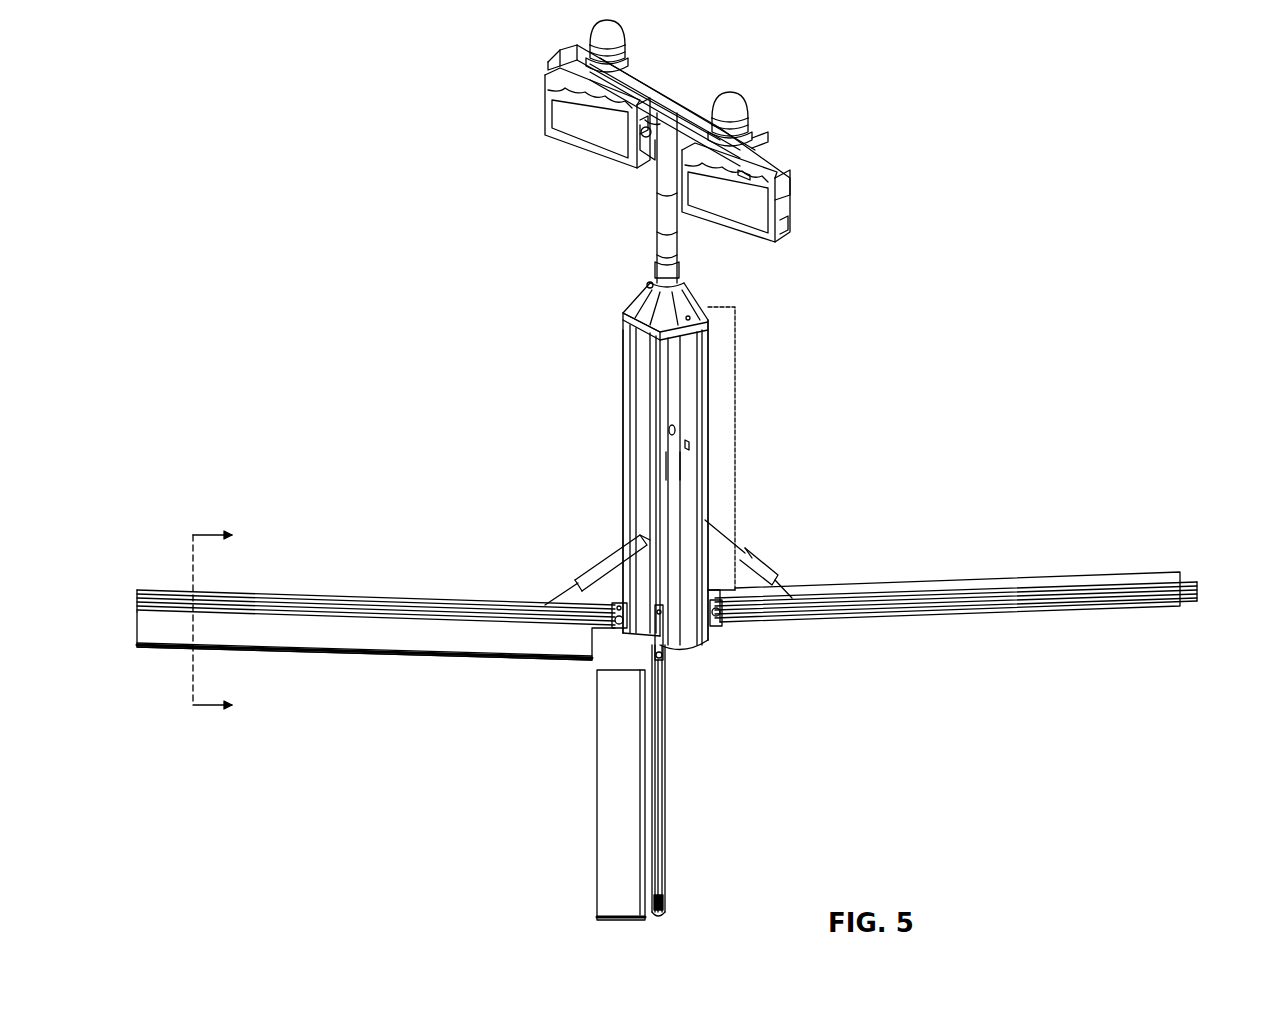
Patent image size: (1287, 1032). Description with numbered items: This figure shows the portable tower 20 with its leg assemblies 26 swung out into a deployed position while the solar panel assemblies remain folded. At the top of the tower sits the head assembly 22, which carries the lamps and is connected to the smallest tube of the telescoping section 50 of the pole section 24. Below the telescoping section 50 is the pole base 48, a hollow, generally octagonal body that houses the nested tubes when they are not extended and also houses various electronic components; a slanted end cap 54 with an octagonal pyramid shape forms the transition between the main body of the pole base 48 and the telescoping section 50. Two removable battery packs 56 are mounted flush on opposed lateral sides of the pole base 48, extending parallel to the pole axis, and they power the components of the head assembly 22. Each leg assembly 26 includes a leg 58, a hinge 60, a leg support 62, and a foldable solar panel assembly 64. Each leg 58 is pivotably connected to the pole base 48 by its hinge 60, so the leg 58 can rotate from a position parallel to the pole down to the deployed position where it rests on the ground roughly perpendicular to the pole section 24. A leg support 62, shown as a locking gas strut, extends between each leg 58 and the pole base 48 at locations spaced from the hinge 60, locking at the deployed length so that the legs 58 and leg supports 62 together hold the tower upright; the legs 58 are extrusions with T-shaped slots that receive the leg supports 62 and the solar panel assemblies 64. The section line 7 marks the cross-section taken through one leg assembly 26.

The portable tower 20 is at (342, 104).
The head assembly 22 is at (782, 75).
The pole section 24 is at (730, 478).
The leg assembly 26 is at (985, 628).
The pole base 48 is at (700, 400).
The telescoping section 50 is at (680, 242).
The end cap 54 is at (635, 275).
The battery pack 56 is at (614, 460).
The leg 58 is at (340, 590).
The hinge 60 is at (716, 628).
The leg support 62 is at (600, 548).
The foldable solar panel assembly 64 is at (520, 668).
The section line 7- 7 is at (228, 624).